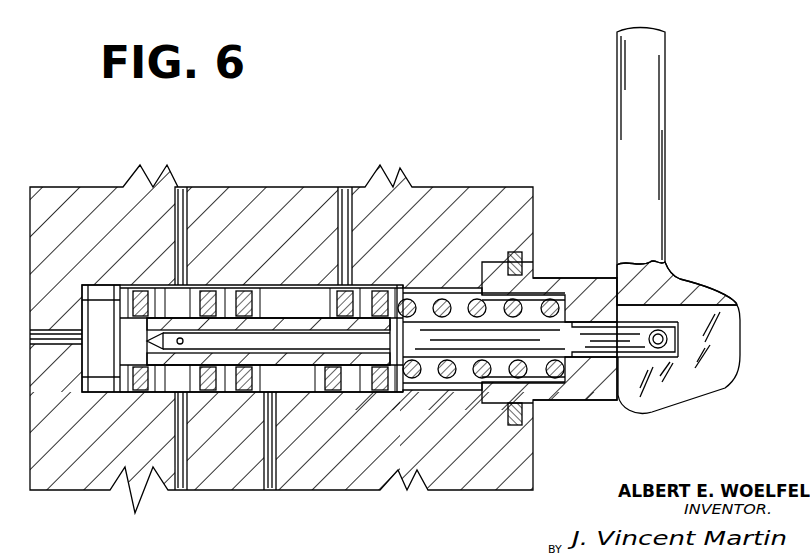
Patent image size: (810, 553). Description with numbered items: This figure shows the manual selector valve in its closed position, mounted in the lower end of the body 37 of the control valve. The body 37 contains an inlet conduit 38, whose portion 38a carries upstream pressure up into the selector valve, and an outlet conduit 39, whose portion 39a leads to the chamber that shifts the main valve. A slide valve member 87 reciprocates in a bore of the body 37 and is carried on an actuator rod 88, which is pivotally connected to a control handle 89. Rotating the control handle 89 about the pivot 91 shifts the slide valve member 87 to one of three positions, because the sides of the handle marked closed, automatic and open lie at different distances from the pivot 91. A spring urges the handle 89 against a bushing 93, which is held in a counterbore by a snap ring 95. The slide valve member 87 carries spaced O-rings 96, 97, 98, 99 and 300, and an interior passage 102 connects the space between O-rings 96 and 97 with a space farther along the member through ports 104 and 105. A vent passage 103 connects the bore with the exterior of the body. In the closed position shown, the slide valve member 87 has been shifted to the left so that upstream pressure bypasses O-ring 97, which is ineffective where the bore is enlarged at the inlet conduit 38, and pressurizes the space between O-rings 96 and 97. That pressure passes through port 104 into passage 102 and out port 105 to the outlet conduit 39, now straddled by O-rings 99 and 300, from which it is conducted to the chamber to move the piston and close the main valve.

The body 37 is at (497, 198).
The inlet conduit 38 is at (345, 195).
The inlet conduit portion 38a is at (270, 460).
The outlet conduit 39 is at (183, 195).
The outlet passage portion 39a is at (180, 492).
The slide valve member 87 is at (105, 322).
The actuator rod 88 is at (556, 342).
The control handle 89 is at (648, 118).
The pivot 91 is at (667, 340).
The bushing 93 is at (565, 282).
The snap ring 95 is at (530, 424).
The O-ring 96 is at (380, 392).
The O-ring 97 is at (332, 392).
The O-ring 98 is at (245, 390).
The O-ring 99 is at (210, 390).
The interior passage 102 is at (292, 338).
The vent passage 103 is at (55, 338).
The port 104 is at (360, 337).
The port 105 is at (180, 335).
The O-ring 300 is at (150, 390).